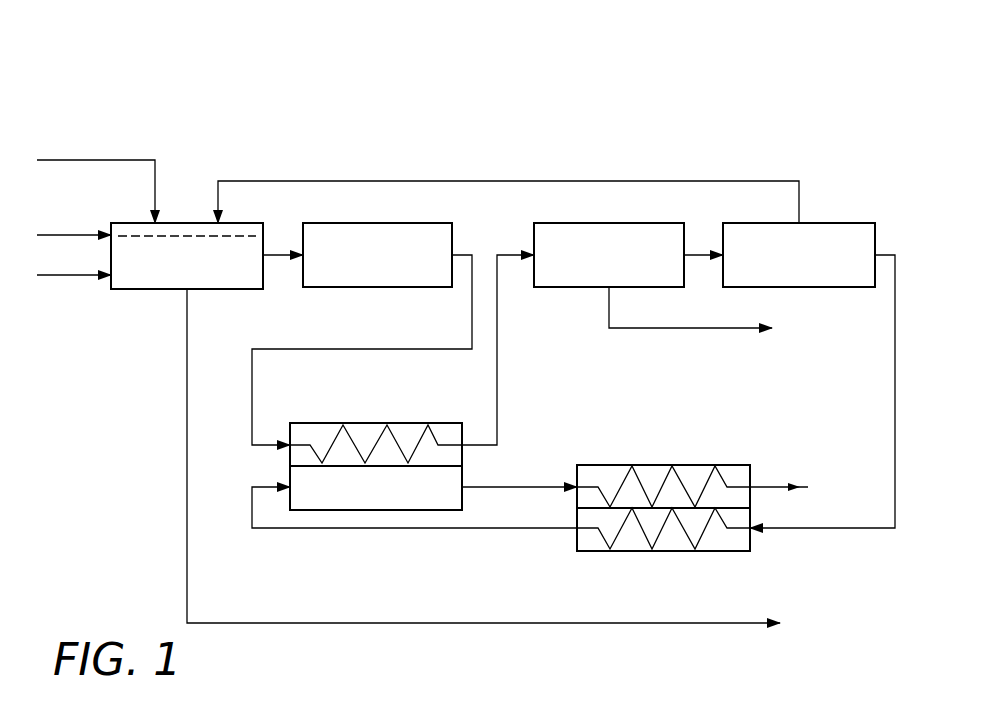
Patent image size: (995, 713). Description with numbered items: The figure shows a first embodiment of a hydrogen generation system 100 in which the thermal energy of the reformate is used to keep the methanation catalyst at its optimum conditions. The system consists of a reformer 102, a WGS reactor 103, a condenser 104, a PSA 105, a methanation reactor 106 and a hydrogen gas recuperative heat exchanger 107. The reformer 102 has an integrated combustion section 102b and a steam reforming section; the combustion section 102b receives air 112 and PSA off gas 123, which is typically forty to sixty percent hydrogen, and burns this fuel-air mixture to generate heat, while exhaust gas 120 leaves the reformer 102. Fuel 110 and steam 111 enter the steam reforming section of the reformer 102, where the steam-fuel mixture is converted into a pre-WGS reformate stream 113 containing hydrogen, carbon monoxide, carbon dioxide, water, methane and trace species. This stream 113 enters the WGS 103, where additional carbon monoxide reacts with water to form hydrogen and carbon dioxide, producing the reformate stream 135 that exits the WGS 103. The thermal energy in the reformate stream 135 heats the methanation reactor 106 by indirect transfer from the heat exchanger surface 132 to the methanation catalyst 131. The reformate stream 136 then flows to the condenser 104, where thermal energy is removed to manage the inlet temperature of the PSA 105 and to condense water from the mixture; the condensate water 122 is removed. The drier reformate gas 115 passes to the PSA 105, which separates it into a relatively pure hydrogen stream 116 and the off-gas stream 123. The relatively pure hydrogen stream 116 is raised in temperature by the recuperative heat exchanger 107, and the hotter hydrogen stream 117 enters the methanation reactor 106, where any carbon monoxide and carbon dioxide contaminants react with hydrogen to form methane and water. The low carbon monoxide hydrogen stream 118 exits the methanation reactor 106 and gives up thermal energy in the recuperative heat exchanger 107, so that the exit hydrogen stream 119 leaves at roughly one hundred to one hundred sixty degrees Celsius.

The hydrogen generation system 100 is at (622, 124).
The reformer 102 is at (148, 290).
The combustion section 102b is at (173, 234).
The WGS reactor 103 is at (372, 290).
The condenser 104 is at (582, 290).
The PSA 105 is at (838, 223).
The methanation reactor 106 is at (385, 510).
The hydrogen gas recuperative heat exchanger 107 is at (640, 551).
The fuel 110 is at (62, 280).
The steam 111 is at (66, 234).
The air 112 is at (156, 160).
The pre-WGS reformate stream 113 is at (270, 255).
The drier reformate gas 115 is at (694, 255).
The relatively pure hydrogen stream 116 is at (880, 530).
The hotter relatively pure hydrogen stream 117 is at (443, 530).
The low CO concentration hydrogen stream 118 is at (505, 495).
The exit hydrogen stream 119 is at (800, 486).
The exhaust gas 120 is at (378, 623).
The condensate water 122 is at (622, 330).
The PSA off gas 123 is at (428, 181).
The methanation catalyst 131 is at (320, 510).
The heat exchanger surface 132 is at (366, 426).
The reformate stream 135 is at (252, 372).
The reformate stream 136 is at (497, 412).